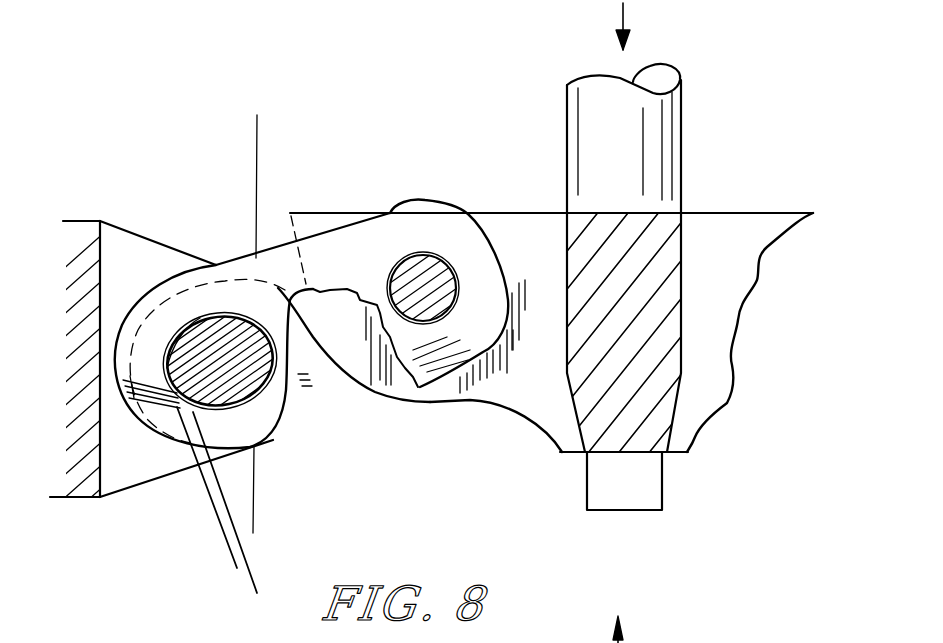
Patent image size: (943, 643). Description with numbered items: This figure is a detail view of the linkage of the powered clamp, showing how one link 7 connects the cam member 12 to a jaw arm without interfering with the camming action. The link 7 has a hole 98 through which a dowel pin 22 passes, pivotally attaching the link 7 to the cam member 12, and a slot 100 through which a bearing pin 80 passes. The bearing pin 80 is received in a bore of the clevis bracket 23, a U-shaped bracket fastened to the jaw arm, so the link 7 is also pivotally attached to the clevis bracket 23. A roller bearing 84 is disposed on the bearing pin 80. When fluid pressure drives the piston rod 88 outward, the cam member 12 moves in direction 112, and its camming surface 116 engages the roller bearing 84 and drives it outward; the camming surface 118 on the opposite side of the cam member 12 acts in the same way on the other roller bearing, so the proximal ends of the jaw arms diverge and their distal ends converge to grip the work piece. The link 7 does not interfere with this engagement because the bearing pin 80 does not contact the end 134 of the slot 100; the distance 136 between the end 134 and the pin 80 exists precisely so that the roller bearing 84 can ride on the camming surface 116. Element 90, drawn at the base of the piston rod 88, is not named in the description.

The link 7 is at (243, 258).
The cam member 12 is at (515, 223).
The dowel pin 22 is at (423, 277).
The clevis bracket 23 is at (117, 250).
The bearing pin 80 is at (240, 333).
The roller bearing 84 is at (310, 406).
The piston rod 88 is at (642, 168).
The plunger foot 90 is at (647, 488).
The hole 98 is at (433, 273).
The slot 100 is at (200, 324).
The direction 112 is at (627, 17).
The camming surface 116 is at (470, 401).
The camming surface 118 is at (712, 412).
The end 134 is at (181, 396).
The distance 136 is at (172, 514).